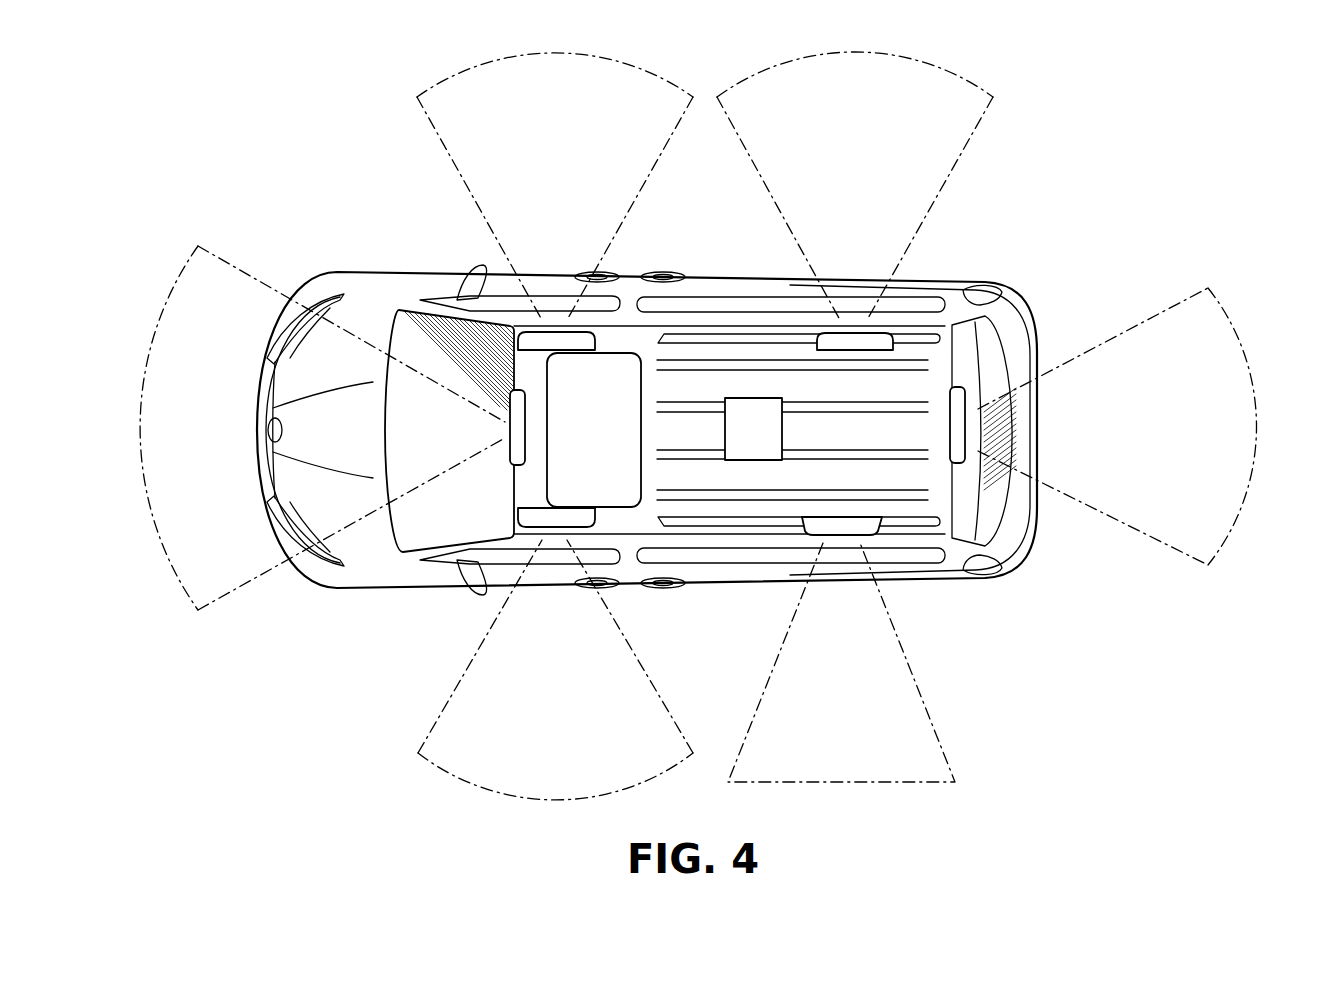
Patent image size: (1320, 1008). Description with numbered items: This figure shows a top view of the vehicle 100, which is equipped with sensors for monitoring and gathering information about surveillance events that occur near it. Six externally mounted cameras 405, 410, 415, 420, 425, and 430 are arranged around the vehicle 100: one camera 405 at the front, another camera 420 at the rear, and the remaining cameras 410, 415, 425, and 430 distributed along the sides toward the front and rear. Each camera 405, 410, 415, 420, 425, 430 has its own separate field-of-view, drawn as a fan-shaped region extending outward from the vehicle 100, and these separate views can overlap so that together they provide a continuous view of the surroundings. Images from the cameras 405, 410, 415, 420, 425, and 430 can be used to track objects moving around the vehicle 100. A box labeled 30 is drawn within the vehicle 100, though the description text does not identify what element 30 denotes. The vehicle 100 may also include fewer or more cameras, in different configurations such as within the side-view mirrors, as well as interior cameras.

The vehicle 100 is at (1008, 274).
The controller 30 is at (741, 440).
The camera 405 is at (508, 423).
The camera 410 is at (585, 333).
The camera 415 is at (880, 333).
The camera 420 is at (967, 448).
The camera 425 is at (863, 537).
The camera 430 is at (582, 528).